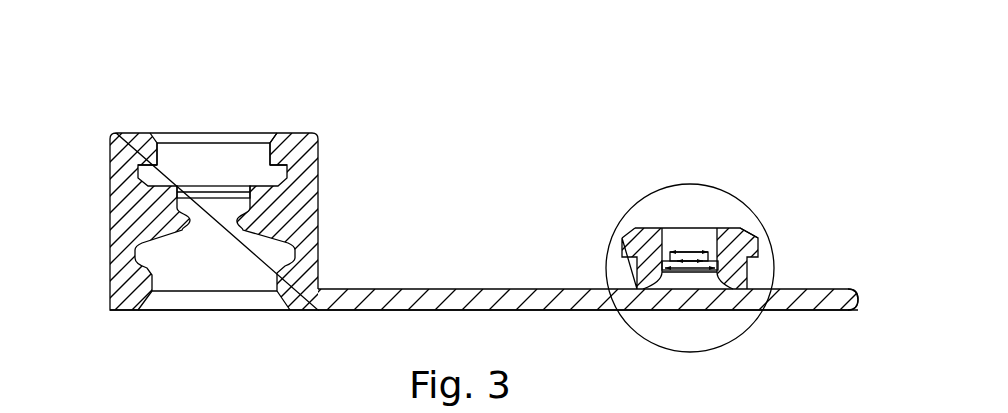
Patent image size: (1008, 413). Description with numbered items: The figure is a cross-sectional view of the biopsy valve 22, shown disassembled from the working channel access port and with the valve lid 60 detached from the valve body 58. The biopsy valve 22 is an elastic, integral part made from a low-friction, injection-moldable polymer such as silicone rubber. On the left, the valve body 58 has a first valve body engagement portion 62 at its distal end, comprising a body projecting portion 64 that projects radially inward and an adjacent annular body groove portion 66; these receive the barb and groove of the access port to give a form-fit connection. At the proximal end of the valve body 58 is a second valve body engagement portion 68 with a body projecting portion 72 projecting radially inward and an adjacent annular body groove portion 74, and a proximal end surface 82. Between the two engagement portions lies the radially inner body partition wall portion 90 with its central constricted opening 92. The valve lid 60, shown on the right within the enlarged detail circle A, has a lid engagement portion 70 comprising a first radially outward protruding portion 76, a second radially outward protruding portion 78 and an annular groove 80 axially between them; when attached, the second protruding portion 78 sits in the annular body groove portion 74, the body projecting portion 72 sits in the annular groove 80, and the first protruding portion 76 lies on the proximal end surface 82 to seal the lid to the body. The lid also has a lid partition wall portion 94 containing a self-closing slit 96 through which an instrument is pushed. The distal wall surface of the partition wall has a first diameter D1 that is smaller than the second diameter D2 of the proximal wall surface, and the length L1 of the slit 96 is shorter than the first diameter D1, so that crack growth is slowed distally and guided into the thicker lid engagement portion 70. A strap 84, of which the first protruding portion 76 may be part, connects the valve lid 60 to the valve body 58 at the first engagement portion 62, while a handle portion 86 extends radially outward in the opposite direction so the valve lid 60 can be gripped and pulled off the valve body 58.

The biopsy valve 22 is at (527, 117).
The valve body 58 is at (120, 108).
The valve lid 60 is at (765, 178).
The first valve body engagement portion 62 is at (118, 276).
The body projecting portion 64 is at (137, 288).
The annular body groove portion 66 is at (136, 249).
The second valve body engagement portion 68 is at (300, 145).
The lid engagement portion 70 is at (758, 250).
The body projecting portion 72 is at (290, 143).
The annular body groove portion 74 is at (291, 178).
The first radially outward protruding portion 76 is at (655, 283).
The second radially outward protruding portion 78 is at (622, 238).
The annular groove 80 is at (636, 268).
The proximal end surface 82 is at (275, 142).
The strap 84 is at (432, 302).
The handle portion 86 is at (833, 300).
The body partition wall portion 90 is at (243, 192).
The central constricted opening 92 is at (214, 192).
The lid partition wall portion 94 is at (705, 250).
The self-closing slit 96 is at (705, 273).
The detail area A is at (721, 172).
The first diameter D1 is at (668, 250).
The second diameter D2 is at (681, 272).
The length of the slit L1 is at (677, 260).